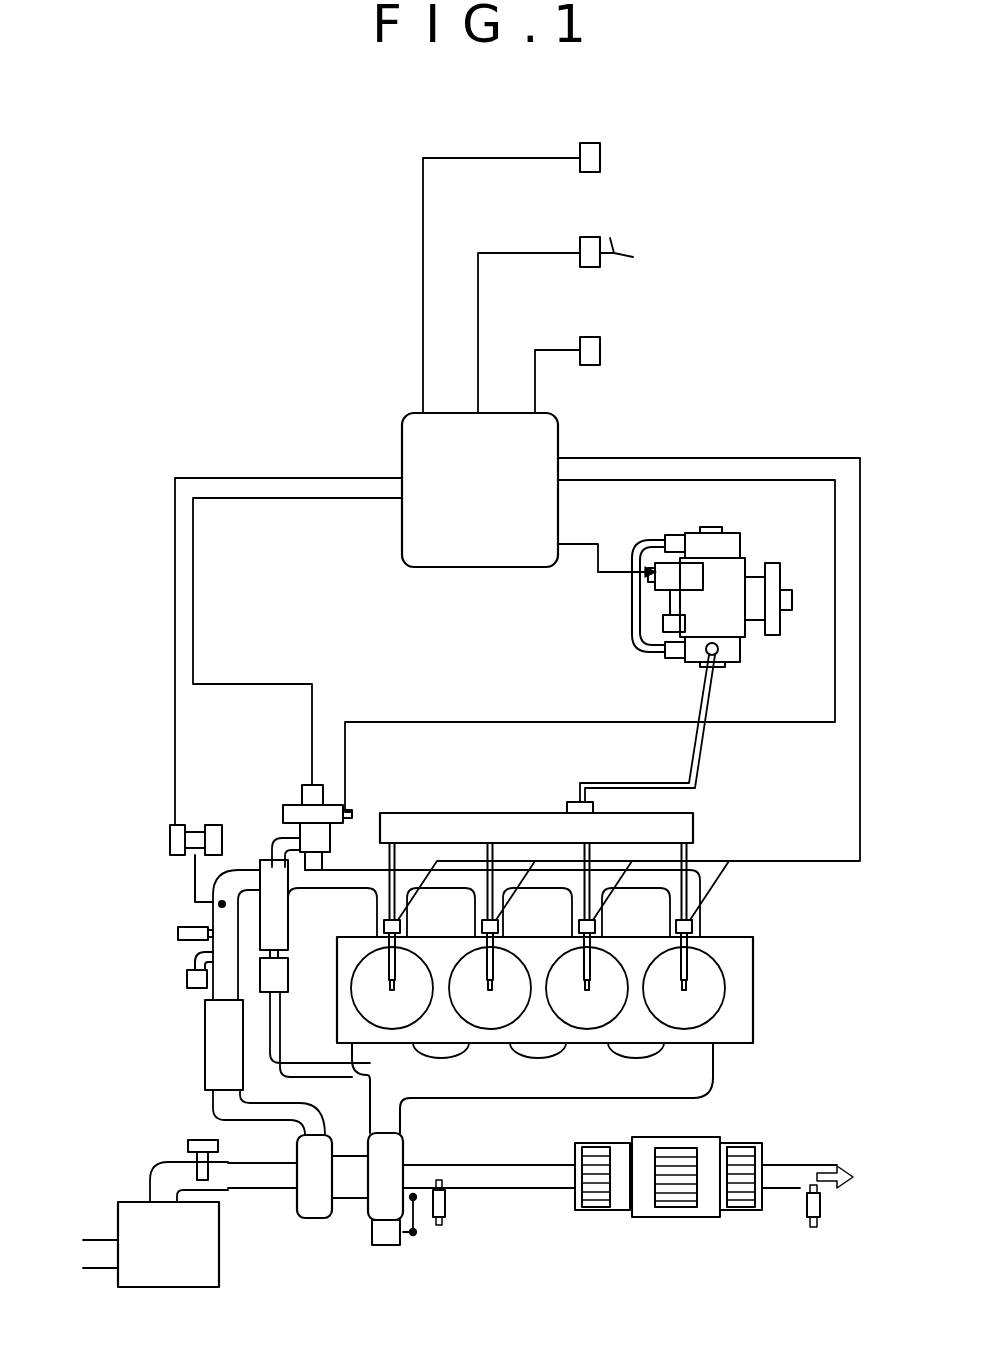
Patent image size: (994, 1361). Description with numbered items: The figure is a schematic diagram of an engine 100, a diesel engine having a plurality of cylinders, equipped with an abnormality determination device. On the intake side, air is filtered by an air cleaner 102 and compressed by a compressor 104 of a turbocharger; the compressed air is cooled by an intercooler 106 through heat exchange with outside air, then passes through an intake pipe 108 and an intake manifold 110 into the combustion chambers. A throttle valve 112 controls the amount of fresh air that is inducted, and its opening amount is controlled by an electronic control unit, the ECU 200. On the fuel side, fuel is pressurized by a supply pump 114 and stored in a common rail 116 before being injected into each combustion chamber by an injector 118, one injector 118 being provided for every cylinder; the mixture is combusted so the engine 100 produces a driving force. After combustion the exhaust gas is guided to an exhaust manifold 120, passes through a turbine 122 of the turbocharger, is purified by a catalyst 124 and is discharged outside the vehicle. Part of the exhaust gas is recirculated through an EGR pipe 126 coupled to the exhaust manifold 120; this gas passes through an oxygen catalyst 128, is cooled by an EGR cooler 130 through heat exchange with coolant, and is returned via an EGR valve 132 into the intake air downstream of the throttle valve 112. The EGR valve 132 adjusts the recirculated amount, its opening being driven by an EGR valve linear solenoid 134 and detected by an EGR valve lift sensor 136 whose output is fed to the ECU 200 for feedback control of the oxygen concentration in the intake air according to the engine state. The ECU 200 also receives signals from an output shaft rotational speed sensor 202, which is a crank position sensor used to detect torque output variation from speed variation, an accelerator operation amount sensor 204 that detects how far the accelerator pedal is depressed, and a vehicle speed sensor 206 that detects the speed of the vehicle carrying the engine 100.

The engine 100 is at (586, 927).
The air cleaner 102 is at (219, 1272).
The compressor 104 is at (313, 1220).
The intercooler 106 is at (205, 1050).
The intake pipe 108 is at (243, 867).
The intake manifold 110 is at (690, 872).
The throttle valve 112 is at (215, 908).
The supply pump 114 is at (752, 562).
The common rail 116 is at (497, 812).
The injector 118 is at (398, 968).
The exhaust manifold 120 is at (715, 1082).
The turbine 122 is at (403, 1150).
The catalyst 124 is at (593, 1210).
The EGR pipe 126 is at (308, 1030).
The oxygen catalyst 128 is at (308, 987).
The EGR cooler 130 is at (288, 907).
The EGR valve 132 is at (330, 838).
The EGR valve linear solenoid 134 is at (352, 812).
The EGR valve lift sensor 136 is at (304, 785).
The electronic control unit (ECU) 200 is at (558, 425).
The output shaft rotational speed sensor 202 is at (590, 143).
The accelerator operation amount sensor 204 is at (590, 237).
The vehicle speed sensor 206 is at (590, 337).